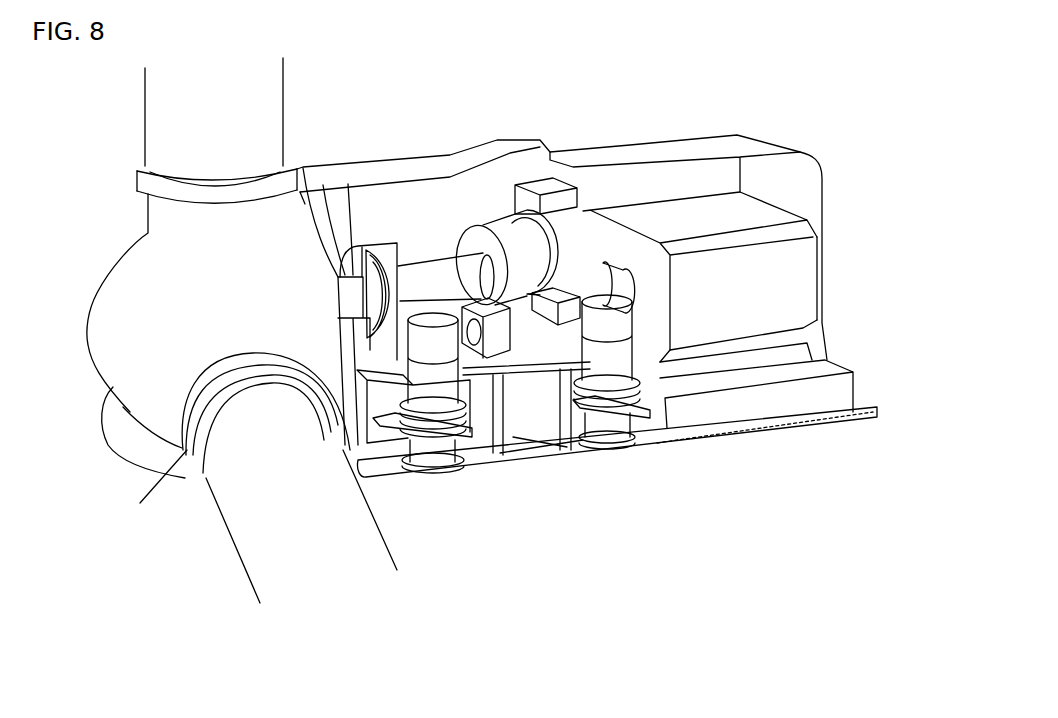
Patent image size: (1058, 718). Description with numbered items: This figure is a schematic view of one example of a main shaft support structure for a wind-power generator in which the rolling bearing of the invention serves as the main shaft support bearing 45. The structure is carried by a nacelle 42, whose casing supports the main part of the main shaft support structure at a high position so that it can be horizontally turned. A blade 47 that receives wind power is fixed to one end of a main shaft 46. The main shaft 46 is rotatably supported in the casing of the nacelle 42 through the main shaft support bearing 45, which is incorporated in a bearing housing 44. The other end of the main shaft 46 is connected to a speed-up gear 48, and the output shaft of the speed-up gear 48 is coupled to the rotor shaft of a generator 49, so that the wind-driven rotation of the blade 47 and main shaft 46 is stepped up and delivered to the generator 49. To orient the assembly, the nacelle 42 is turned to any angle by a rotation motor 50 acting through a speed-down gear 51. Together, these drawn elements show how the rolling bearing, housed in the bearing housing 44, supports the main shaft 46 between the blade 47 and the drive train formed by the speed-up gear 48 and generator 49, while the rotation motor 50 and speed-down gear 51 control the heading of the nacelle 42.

The nacelle 42 is at (704, 130).
The bearing housing 44 is at (362, 247).
The main shaft support bearing 45 is at (385, 267).
The main shaft 46 is at (348, 292).
The blade 47 is at (165, 123).
The speed-up gear 48 is at (583, 253).
The generator 49 is at (747, 287).
The rotation motor 50 is at (440, 377).
The speed-down gear 51 is at (437, 417).